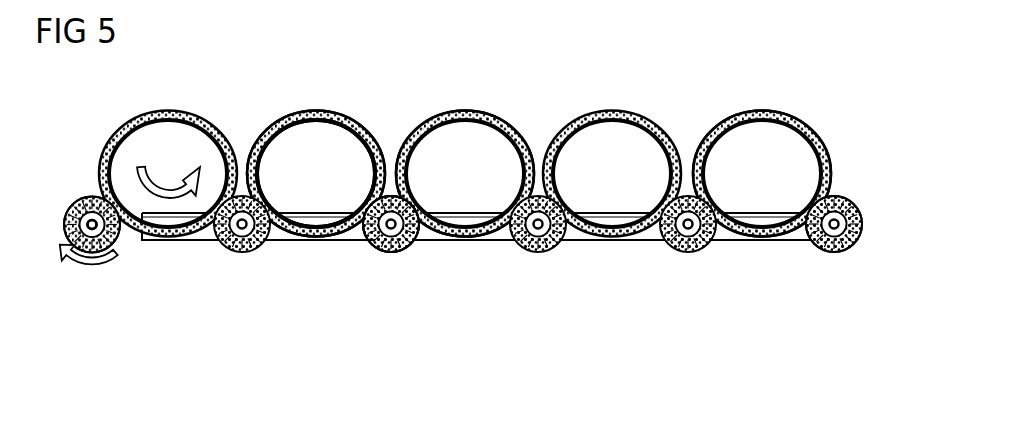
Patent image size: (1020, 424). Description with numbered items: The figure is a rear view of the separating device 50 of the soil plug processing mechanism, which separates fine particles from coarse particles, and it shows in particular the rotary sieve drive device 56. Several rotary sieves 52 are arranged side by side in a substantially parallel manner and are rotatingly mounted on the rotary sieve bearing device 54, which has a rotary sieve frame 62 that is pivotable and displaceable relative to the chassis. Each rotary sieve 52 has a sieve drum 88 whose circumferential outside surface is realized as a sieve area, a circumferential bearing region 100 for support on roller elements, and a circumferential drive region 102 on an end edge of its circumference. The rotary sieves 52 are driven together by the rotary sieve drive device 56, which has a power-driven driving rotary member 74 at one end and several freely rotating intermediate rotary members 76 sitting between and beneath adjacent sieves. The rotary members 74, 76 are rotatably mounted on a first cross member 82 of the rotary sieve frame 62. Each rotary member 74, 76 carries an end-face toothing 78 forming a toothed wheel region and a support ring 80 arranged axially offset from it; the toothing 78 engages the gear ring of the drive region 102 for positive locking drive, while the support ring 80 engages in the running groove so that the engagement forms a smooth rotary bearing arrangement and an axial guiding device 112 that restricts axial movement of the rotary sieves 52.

The separating device 50 is at (458, 183).
The rotary sieve 52 is at (213, 111).
The rotary sieve bearing device 54 is at (857, 170).
The rotary sieve drive device 56 is at (362, 290).
The rotary sieve frame 62 is at (792, 242).
The driving rotary member 74 is at (120, 241).
The intermediate rotary member 76 is at (245, 251).
The end-face toothing 78 is at (82, 197).
The support ring 80 is at (67, 203).
The first cross member 82 is at (724, 242).
The sieve drum 88 is at (737, 110).
The bearing region 100 is at (333, 105).
The drive region 102 is at (292, 110).
The axial guiding device 112 is at (345, 248).